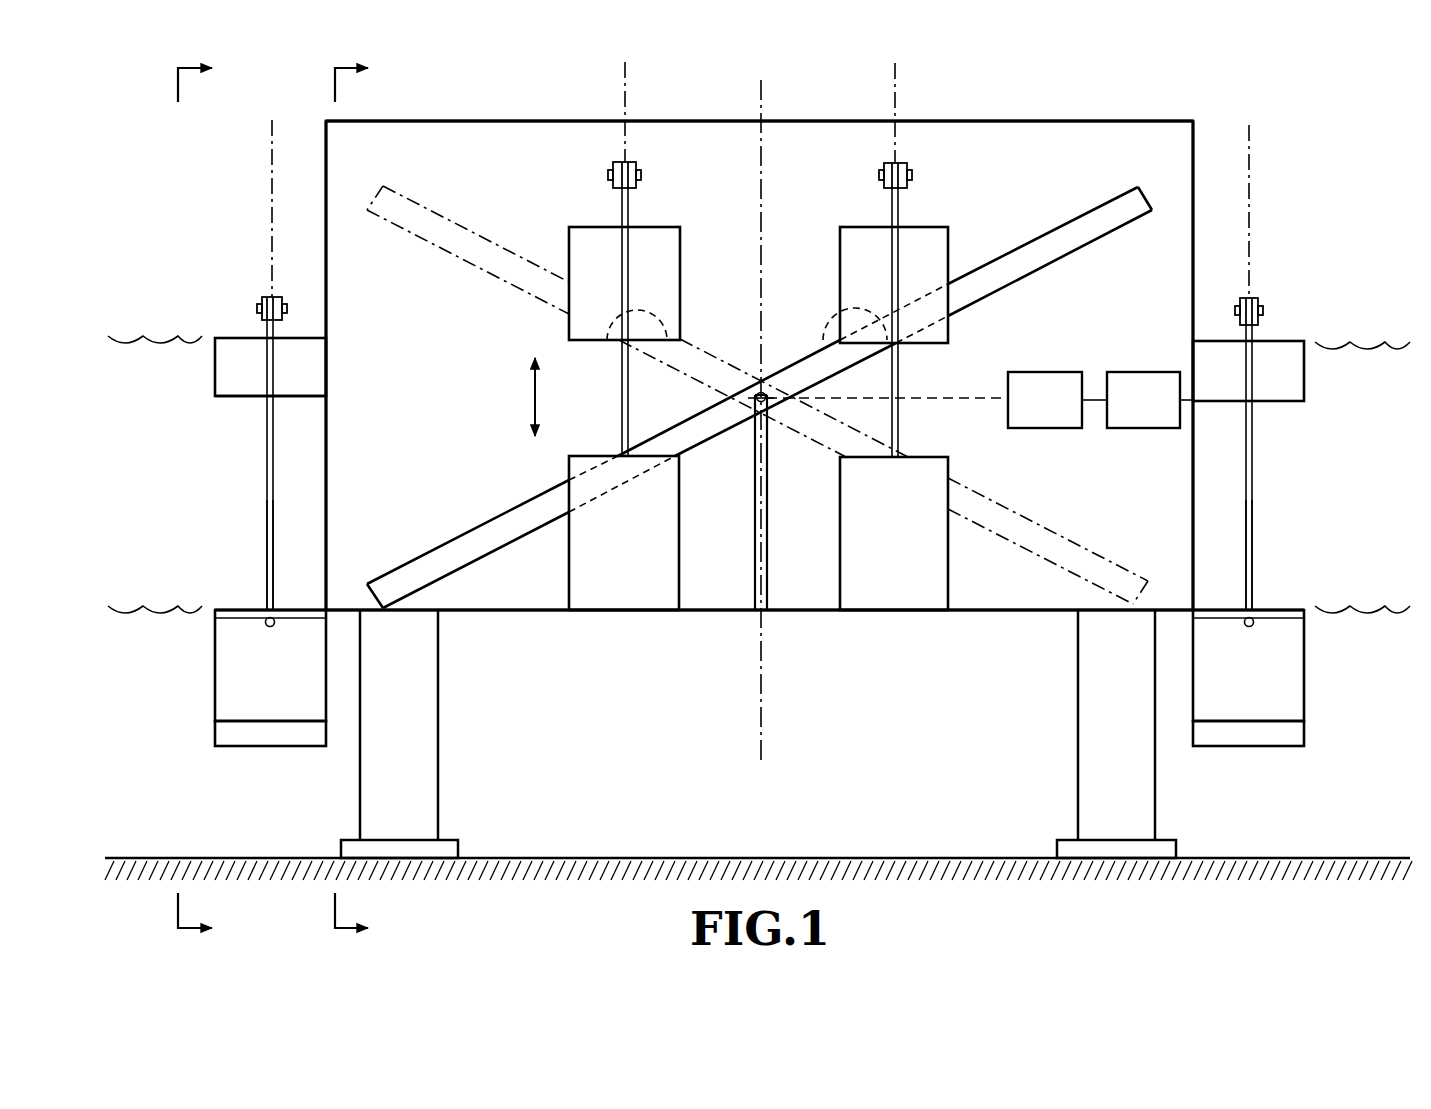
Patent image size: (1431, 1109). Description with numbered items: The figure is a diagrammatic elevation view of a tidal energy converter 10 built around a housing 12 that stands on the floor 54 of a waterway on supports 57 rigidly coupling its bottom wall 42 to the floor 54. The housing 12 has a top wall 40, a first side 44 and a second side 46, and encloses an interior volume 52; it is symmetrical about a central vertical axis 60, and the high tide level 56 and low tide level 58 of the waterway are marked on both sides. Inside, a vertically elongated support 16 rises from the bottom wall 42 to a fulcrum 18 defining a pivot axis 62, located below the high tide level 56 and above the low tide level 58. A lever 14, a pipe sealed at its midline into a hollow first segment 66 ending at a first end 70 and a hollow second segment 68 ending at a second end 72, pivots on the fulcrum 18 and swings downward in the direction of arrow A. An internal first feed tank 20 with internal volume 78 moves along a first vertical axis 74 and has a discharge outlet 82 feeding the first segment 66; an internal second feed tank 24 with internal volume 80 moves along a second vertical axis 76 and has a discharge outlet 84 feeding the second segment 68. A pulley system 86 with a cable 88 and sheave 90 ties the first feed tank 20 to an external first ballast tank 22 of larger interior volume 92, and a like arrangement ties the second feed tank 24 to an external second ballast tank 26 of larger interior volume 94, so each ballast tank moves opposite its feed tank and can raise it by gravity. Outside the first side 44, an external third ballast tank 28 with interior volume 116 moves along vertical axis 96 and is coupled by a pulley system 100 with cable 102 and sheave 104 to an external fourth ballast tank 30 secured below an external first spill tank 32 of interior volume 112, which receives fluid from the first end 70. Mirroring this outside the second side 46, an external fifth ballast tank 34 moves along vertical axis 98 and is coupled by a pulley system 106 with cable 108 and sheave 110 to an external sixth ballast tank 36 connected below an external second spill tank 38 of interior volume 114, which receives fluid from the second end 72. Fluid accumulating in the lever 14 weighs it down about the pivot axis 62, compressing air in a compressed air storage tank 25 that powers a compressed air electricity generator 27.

The tidal energy converter 10 is at (1295, 135).
The housing 12 is at (1020, 113).
The lever 14 is at (985, 302).
The support 16 is at (755, 545).
The fulcrum 18 is at (757, 398).
The internal first feed tank 20 is at (588, 220).
The external first ballast tank 22 is at (684, 578).
The internal second feed tank 24 is at (932, 223).
The compressed air storage tank 25 is at (1057, 400).
The external second ballast tank 26 is at (921, 453).
The compressed air electricity generator 27 is at (1150, 400).
The external third ballast tank 28 is at (213, 367).
The external fourth ballast tank 30 is at (213, 727).
The external first spill tank 32 is at (213, 645).
The external fifth ballast tank 34 is at (1307, 382).
The external sixth ballast tank 36 is at (1307, 736).
The external second spill tank 38 is at (1307, 654).
The top wall 40 is at (1124, 119).
The bottom wall 42 is at (802, 612).
The first side 44 is at (325, 222).
The second side 46 is at (1195, 222).
The interior volume 52 is at (811, 181).
The floor 54 is at (865, 856).
The high tide level 56 is at (156, 343).
The supports 57 is at (418, 730).
The low tide level 58 is at (154, 607).
The vertical axis 60 is at (759, 96).
The pivot axis 62 is at (740, 456).
The first segment 66 is at (497, 520).
The second segment 68 is at (1047, 259).
The first end 70 is at (378, 597).
The second end 72 is at (1150, 199).
The first vertical axis 74 is at (624, 96).
The second vertical axis 76 is at (897, 96).
The internal volume of first feed tank 78 is at (660, 246).
The internal volume of second feed tank 80 is at (858, 247).
The discharge outlet 82 is at (668, 311).
The discharge outlet 84 is at (853, 309).
The pulley system 86 is at (634, 208).
The cable 88 is at (620, 394).
The sheave 90 is at (638, 172).
The interior volume of first ballast tank 92 is at (606, 558).
The interior volume of second ballast tank 94 is at (915, 560).
The vertical axis 96 is at (271, 222).
The vertical axis 98 is at (1250, 226).
The pulley system 100 is at (264, 487).
The cable 102 is at (266, 525).
The sheave 104 is at (262, 300).
The pulley system 106 is at (1255, 462).
The cable 108 is at (1253, 503).
The sheave 110 is at (1259, 302).
The interior volume of first spill tank 112 is at (246, 660).
The interior volume of second spill tank 114 is at (1276, 667).
The interior volume of third ballast tank 116 is at (238, 386).